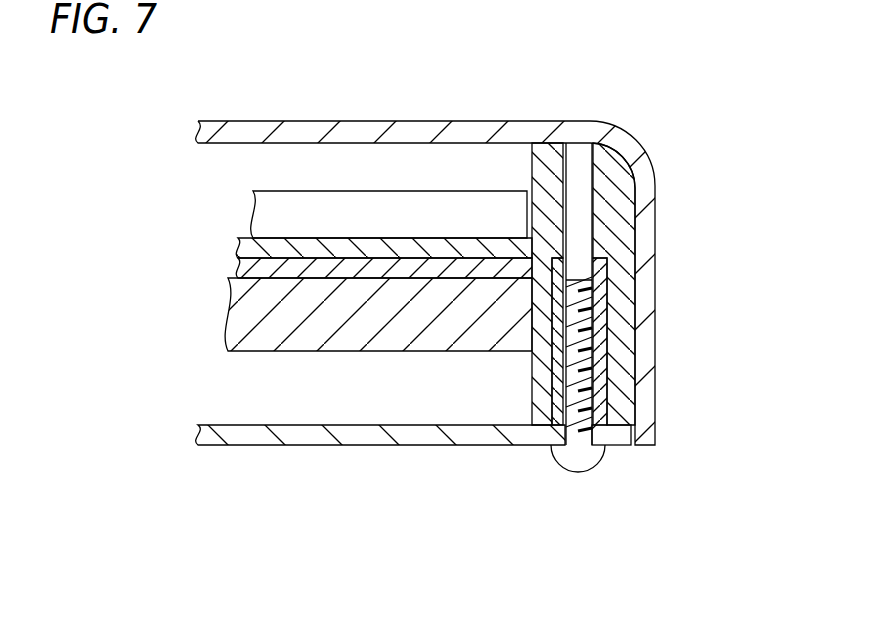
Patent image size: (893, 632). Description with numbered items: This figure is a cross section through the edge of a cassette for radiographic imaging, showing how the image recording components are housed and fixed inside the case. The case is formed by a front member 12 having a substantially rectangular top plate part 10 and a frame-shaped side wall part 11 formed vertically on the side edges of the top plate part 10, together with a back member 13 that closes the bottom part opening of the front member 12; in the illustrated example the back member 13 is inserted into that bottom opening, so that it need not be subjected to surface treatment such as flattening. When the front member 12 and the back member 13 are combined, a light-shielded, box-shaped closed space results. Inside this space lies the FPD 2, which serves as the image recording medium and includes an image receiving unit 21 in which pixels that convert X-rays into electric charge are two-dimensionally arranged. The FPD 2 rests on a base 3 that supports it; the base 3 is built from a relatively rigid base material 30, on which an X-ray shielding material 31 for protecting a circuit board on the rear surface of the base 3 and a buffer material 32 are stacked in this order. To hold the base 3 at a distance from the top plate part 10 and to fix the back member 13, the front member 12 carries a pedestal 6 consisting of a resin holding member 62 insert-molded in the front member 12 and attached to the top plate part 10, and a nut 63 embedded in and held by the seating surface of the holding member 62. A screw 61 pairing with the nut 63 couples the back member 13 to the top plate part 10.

The FPD 2 is at (389, 150).
The image receiving unit 21 is at (468, 210).
The base 3 is at (378, 400).
The base material 30 is at (422, 320).
The X-ray shielding material 31 is at (372, 267).
The buffer material 32 is at (300, 247).
The pedestal for fixing the back member 6 is at (659, 340).
The screw 61 is at (578, 466).
The holding member 62 is at (617, 357).
The nut 63 is at (600, 402).
The top plate part 10 is at (357, 130).
The side wall part 11 is at (645, 284).
The front member 12 is at (626, 138).
The back member 13 is at (482, 446).